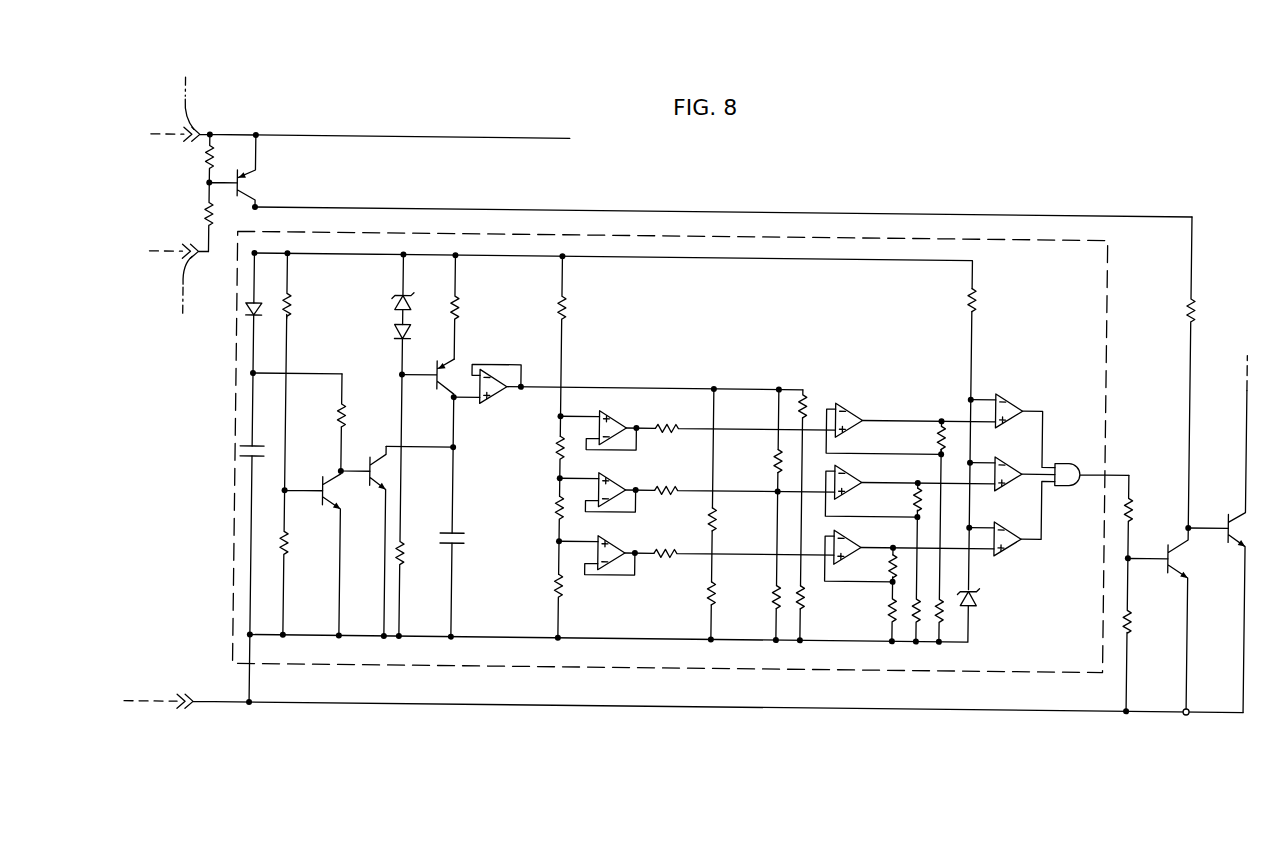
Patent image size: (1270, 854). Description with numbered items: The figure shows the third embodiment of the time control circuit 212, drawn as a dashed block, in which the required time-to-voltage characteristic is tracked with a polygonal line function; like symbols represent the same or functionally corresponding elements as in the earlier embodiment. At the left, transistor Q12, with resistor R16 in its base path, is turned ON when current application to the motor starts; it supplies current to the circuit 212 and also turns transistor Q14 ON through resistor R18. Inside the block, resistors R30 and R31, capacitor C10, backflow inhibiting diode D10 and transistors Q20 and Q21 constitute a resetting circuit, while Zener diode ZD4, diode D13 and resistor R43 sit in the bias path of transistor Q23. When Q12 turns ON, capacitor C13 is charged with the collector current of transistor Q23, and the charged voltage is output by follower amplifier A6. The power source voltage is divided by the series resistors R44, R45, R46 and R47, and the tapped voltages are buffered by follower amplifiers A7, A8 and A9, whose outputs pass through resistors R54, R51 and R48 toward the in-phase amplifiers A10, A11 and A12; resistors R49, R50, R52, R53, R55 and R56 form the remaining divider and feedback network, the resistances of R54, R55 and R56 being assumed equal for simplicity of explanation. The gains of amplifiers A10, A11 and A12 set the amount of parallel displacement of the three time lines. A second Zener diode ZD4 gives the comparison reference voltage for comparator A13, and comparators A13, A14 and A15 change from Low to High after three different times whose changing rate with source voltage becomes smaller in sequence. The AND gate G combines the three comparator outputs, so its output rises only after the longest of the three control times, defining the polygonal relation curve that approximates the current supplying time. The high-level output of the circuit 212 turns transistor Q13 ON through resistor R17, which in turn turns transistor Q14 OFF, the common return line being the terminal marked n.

The time control circuit 212 is at (233, 416).
The resistor R16 is at (206, 214).
The transistor Q12 is at (260, 178).
The backflow inhibiting diode D10 is at (243, 311).
The capacitor C10 is at (243, 452).
The resistor R30 is at (295, 303).
The Zener diode ZD4 is at (394, 301).
The diode D13 is at (395, 332).
The resistor R31 is at (346, 415).
The transistor Q20 is at (328, 482).
The transistor Q21 is at (382, 486).
The resistor R43 is at (462, 307).
The transistor Q23 is at (446, 394).
The capacitor C13 is at (470, 537).
The follower amplifier A6 is at (492, 403).
The resistor R44 is at (567, 307).
The resistor R45 is at (557, 444).
The resistor R46 is at (557, 506).
The resistor R47 is at (557, 588).
The follower amplifier A7 is at (623, 418).
The follower amplifier A8 is at (623, 480).
The follower amplifier A9 is at (623, 542).
The resistor R54 is at (670, 436).
The resistor R51 is at (673, 497).
The resistor R48 is at (670, 562).
The resistor R49 is at (719, 515).
The resistor R50 is at (721, 587).
The resistor R52 is at (776, 459).
The resistor R53 is at (777, 600).
The resistor R55 is at (813, 398).
The resistor R56 is at (811, 597).
The in-phase amplifier A10 is at (851, 424).
The in-phase amplifier A11 is at (851, 489).
The in-phase amplifier A12 is at (853, 542).
The comparator A13 is at (1013, 386).
The comparator A14 is at (1014, 449).
The comparator A15 is at (1018, 545).
The AND gate G is at (1068, 479).
The resistor R17 is at (1137, 489).
The resistor R18 is at (1186, 300).
The transistor Q13 is at (1183, 560).
The transistor Q14 is at (1236, 505).
The neutral terminal n is at (190, 693).